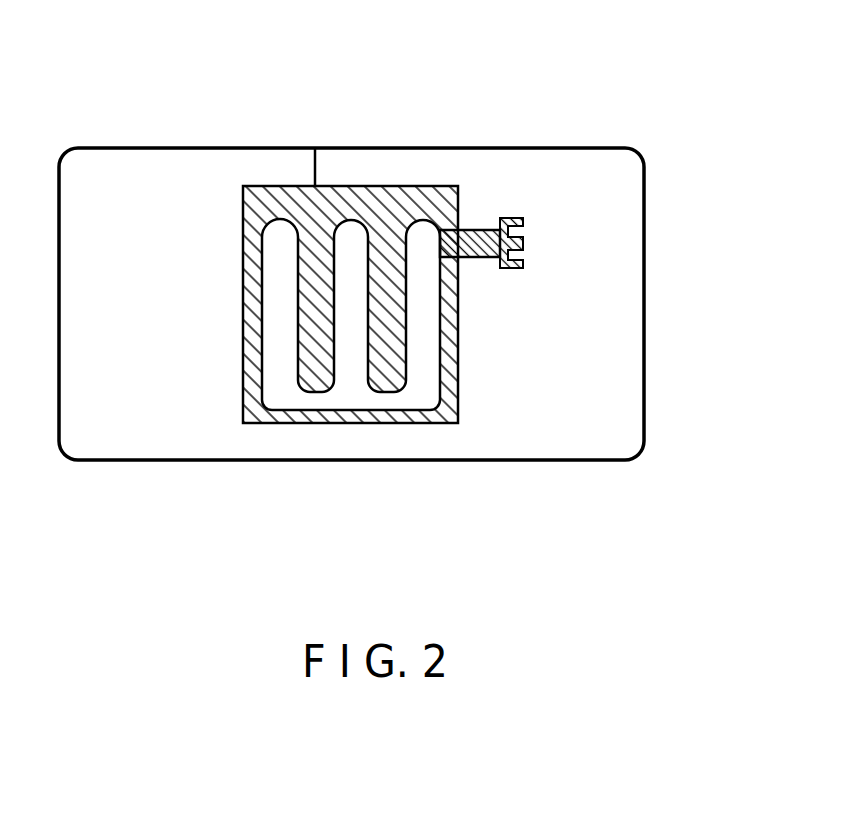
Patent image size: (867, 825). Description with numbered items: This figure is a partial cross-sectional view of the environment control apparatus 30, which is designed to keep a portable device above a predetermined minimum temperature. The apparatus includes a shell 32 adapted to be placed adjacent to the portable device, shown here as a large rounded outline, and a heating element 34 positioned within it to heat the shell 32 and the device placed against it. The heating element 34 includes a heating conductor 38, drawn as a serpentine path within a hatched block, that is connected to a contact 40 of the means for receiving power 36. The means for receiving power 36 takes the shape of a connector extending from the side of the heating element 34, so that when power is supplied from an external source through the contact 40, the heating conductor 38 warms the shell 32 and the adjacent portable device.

The environment control apparatus 30 is at (554, 498).
The shell 32 is at (574, 409).
The heating element 34 is at (315, 148).
The means for receiving power 36 is at (515, 217).
The heating conductor 38 is at (243, 258).
The contact 40 is at (524, 238).